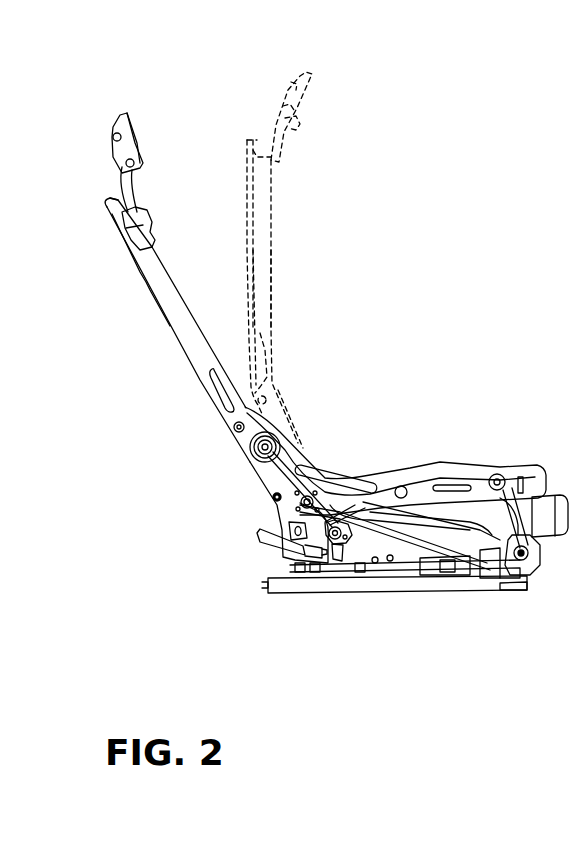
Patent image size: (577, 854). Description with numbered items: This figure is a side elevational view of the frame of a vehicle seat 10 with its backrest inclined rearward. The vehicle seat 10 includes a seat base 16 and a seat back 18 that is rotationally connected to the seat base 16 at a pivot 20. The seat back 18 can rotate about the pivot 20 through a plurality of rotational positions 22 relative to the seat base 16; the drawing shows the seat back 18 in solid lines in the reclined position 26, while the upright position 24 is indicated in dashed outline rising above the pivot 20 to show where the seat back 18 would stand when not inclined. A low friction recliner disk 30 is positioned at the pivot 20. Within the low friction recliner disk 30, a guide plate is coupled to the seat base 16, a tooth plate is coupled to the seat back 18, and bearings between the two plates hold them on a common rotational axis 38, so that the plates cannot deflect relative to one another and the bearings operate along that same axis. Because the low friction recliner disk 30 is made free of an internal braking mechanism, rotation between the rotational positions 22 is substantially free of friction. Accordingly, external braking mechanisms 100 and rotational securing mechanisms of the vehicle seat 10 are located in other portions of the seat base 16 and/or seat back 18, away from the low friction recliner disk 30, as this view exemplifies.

The vehicle seat 10 is at (320, 250).
The seat base 16 is at (436, 462).
The seat back 18 is at (194, 382).
The pivot 20 is at (260, 496).
The rotational positions 22 is at (176, 106).
The upright position 24 is at (276, 310).
The reclined position 26 is at (137, 283).
The low friction recliner disk 30 is at (272, 513).
The common rotational axis 38 is at (287, 504).
The external braking mechanisms 100 is at (285, 562).